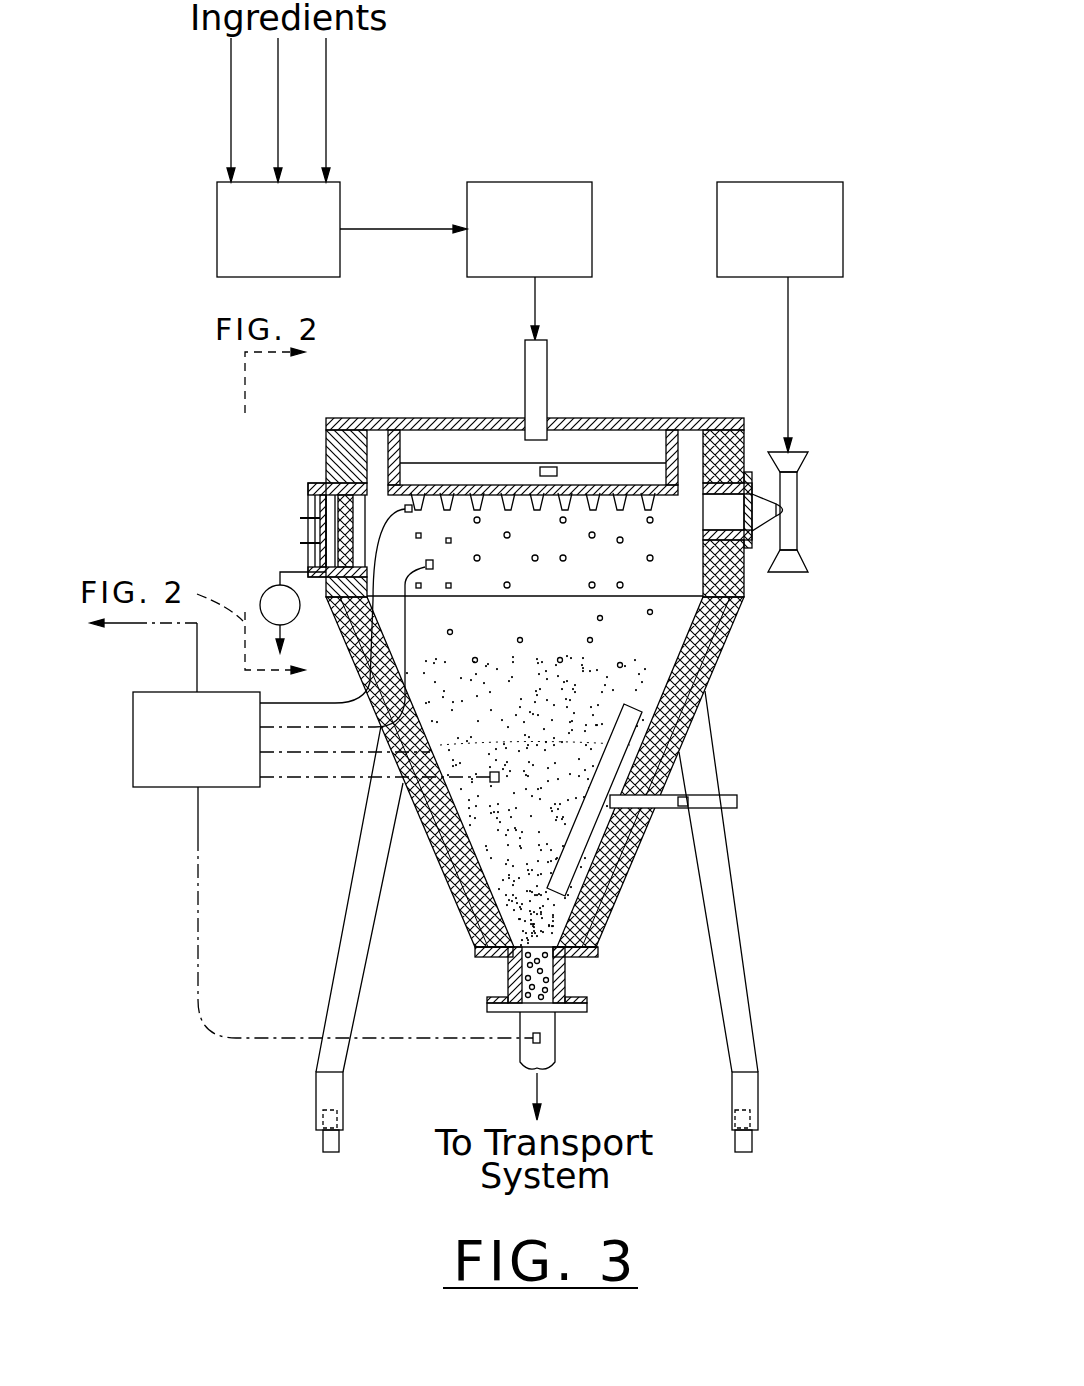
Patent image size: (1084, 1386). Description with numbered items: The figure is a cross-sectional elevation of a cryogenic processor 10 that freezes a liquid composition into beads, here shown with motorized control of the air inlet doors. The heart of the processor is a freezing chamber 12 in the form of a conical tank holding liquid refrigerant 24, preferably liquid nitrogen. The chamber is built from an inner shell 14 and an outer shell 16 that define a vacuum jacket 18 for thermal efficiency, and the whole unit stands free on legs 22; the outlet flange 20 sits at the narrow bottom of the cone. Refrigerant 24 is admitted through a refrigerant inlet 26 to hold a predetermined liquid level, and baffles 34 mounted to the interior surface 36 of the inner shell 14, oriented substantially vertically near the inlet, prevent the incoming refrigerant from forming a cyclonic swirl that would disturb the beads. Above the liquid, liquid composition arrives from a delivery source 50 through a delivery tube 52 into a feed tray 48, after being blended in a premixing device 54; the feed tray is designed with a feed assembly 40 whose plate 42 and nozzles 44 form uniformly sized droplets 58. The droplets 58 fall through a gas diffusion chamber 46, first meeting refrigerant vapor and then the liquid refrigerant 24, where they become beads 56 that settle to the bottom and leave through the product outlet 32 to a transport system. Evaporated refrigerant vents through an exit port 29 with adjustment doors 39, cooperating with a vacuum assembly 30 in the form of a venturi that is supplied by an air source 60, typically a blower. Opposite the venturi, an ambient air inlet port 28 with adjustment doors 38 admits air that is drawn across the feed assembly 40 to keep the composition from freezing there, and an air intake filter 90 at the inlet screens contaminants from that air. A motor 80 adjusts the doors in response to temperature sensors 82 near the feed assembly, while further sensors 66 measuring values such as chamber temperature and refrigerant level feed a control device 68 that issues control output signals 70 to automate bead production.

The cryogenic processor 10 is at (798, 1172).
The freezing chamber 12 is at (580, 825).
The inner shell 14 is at (690, 700).
The outer shell 16 is at (723, 653).
The vacuum jacket 18 is at (702, 677).
The outlet flange 20 is at (493, 957).
The legs 22 is at (745, 1033).
The refrigerant 24 is at (567, 700).
The refrigerant inlet 26 is at (737, 800).
The ambient air inlet port 28 is at (298, 509).
The exit port 29 is at (730, 512).
The vacuum assembly 30 is at (822, 455).
The product outlet 32 is at (556, 1032).
The baffles 34 is at (623, 842).
The interior surface 36 is at (590, 898).
The adjustment doors 38 is at (307, 552).
The adjustment doors 39 is at (803, 562).
The feed assembly 40 is at (635, 445).
The distributor plate 42 is at (472, 455).
The spray nozzles 44 is at (577, 493).
The gas diffusion chamber 46 is at (660, 578).
The feed tray 48 is at (395, 492).
The delivery source 50 is at (550, 252).
The delivery tube 52 is at (533, 365).
The premixing device 54 is at (299, 252).
The beads 56 is at (505, 893).
The droplets 58 is at (653, 613).
The air source 60 is at (800, 252).
The sensors 66 is at (490, 780).
The control device 68 is at (217, 764).
The control output signals 70 is at (140, 623).
The motor 80 is at (265, 591).
The temperature sensors 82 is at (518, 487).
The air intake filter 90 is at (372, 493).